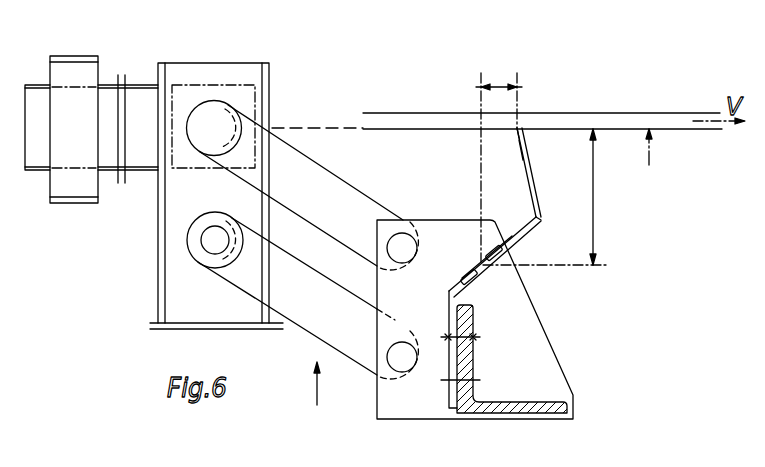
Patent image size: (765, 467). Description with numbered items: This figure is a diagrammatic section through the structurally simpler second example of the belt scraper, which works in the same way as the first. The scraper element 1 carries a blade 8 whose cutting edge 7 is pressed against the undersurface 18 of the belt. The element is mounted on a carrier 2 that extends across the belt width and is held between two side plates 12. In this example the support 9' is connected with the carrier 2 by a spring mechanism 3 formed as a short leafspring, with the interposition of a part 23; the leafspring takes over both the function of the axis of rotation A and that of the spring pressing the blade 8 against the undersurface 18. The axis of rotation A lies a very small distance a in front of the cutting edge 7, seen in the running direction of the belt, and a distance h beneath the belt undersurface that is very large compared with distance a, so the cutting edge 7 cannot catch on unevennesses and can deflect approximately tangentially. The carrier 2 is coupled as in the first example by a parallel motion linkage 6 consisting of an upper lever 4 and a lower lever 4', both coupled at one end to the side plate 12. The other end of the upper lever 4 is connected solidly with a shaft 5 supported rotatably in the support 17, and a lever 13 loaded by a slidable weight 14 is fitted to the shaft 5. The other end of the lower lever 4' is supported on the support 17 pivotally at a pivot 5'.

The scraper element 1 is at (540, 157).
The carrier 2 is at (557, 408).
The spring mechanism 3 is at (492, 262).
The upper lever 4 is at (301, 185).
The lower lever 4' is at (296, 301).
The shaft 5 is at (211, 154).
The pivot 5' is at (214, 257).
The parallel motion linkage 6 is at (326, 387).
The cutting edge 7 is at (513, 131).
The blade 8 is at (522, 160).
The support 9' is at (507, 257).
The side plate 12 is at (546, 364).
The lever 13 is at (143, 93).
The slidable weight 14 is at (83, 62).
The support 17 is at (256, 76).
The undersurface of the belt 18 is at (497, 149).
The part 23 is at (455, 396).
The axis of rotation A is at (480, 261).
The distance a is at (499, 162).
The distance h is at (545, 197).